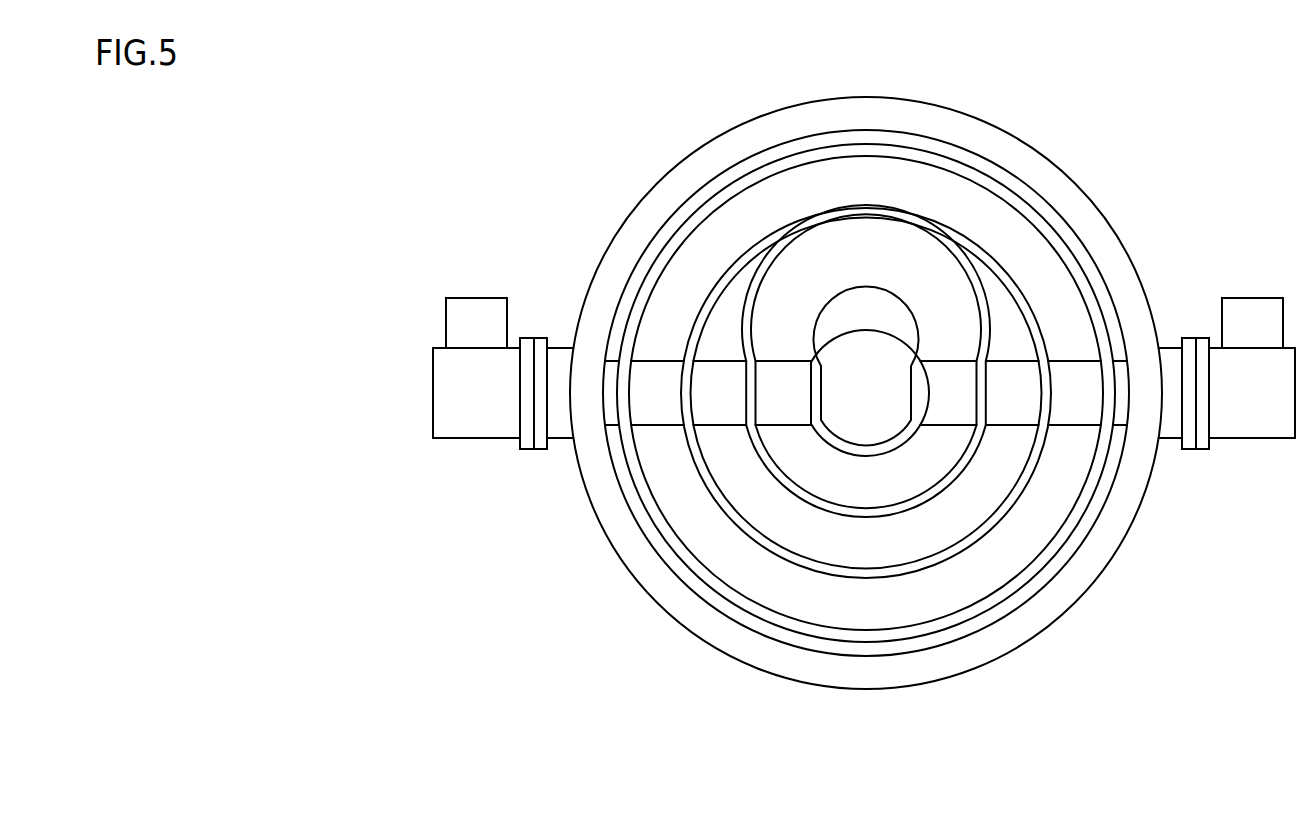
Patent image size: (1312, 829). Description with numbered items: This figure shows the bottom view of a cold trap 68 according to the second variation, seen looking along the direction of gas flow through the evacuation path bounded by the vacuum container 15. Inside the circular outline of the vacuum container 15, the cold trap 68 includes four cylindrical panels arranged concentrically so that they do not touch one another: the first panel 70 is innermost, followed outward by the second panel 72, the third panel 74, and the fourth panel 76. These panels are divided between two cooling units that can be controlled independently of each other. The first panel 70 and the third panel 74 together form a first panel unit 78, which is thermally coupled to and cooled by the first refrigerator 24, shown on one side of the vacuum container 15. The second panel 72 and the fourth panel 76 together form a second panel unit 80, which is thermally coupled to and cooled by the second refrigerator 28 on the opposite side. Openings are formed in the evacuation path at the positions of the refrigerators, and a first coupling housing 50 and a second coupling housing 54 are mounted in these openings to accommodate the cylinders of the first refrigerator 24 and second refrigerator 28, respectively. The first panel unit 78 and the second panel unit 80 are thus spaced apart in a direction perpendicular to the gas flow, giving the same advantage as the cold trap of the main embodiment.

The vacuum container 15 is at (1032, 618).
The first refrigerator 24 is at (455, 422).
The second refrigerator 28 is at (1272, 422).
The first coupling housing 50 is at (559, 362).
The second coupling housing 54 is at (1170, 422).
The cold trap 68 is at (851, 802).
The first panel 70 is at (840, 342).
The second panel 72 is at (967, 333).
The third panel 74 is at (708, 307).
The fourth panel 76 is at (1092, 308).
The first panel unit 78 is at (663, 117).
The second panel unit 80 is at (1162, 117).